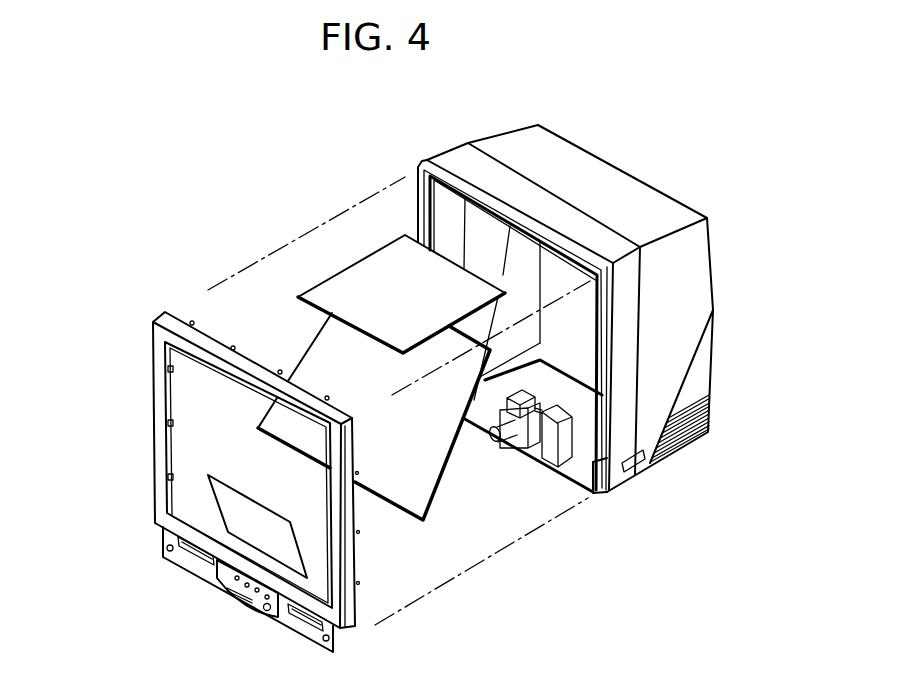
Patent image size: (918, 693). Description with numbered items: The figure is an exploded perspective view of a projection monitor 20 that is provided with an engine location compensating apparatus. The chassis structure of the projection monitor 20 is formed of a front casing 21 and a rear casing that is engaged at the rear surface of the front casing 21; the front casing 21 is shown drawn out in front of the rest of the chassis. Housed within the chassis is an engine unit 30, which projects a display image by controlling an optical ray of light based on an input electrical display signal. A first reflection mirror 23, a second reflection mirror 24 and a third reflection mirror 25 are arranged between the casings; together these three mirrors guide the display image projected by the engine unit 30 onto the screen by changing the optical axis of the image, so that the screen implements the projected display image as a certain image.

The projection monitor 20 is at (129, 171).
The front casing 21 is at (162, 337).
The first reflection mirror 23 is at (258, 535).
The second reflection mirror 24 is at (345, 281).
The third reflection mirror 25 is at (313, 355).
The engine unit 30 is at (518, 453).